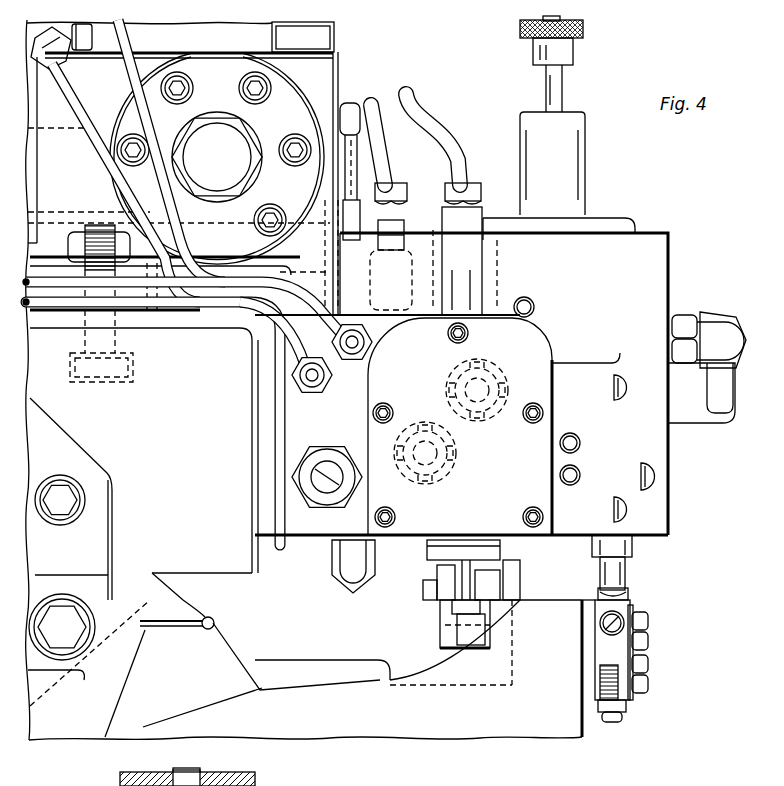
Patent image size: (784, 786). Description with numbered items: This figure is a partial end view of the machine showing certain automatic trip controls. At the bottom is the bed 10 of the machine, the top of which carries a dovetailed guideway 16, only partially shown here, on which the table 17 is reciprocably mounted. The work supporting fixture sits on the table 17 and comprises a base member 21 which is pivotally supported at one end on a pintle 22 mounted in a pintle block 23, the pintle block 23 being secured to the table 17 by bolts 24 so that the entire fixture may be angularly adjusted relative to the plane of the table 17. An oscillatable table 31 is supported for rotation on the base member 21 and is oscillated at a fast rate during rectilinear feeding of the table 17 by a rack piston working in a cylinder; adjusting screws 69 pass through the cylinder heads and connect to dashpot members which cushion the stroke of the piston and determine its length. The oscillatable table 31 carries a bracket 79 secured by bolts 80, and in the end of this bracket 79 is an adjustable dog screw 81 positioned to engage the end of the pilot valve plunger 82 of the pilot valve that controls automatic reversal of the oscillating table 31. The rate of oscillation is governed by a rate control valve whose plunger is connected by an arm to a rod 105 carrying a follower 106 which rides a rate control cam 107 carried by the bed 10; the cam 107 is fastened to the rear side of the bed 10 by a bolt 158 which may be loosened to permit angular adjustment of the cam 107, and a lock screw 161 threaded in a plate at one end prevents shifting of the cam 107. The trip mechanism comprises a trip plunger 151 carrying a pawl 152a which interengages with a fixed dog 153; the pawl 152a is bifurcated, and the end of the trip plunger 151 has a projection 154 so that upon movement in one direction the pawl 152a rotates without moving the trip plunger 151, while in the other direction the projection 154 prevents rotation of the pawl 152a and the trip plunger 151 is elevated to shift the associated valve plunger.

The bed 10 is at (489, 723).
The dovetailed guideway 16 is at (262, 738).
The table 17 is at (147, 453).
The base member 21 is at (320, 78).
The pintle 22 is at (230, 227).
The pintle block 23 is at (48, 270).
The bolts 24 is at (107, 323).
The oscillatable table 31 is at (318, 33).
The adjusting screws 69 is at (223, 148).
The bracket 79 is at (272, 54).
The bolts 80 is at (220, 34).
The adjustable dog screw 81 is at (136, 42).
The pilot valve plunger 82 is at (83, 63).
The rod 105 is at (615, 545).
The follower 106 is at (612, 573).
The rate control cam 107 is at (628, 590).
The trip plunger 151 is at (468, 560).
The pawl 152a is at (457, 610).
The fixed dog 153 is at (465, 642).
The projection 154 is at (463, 618).
The bolt 158 is at (647, 625).
The lock screw 161 is at (615, 610).